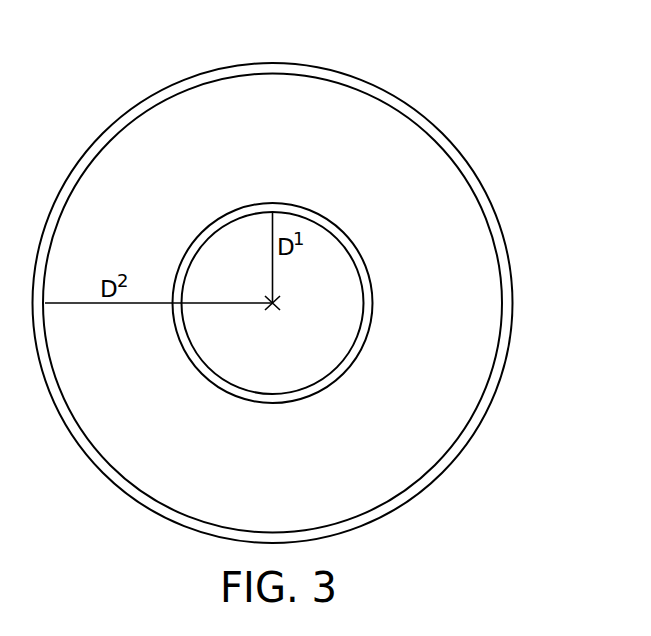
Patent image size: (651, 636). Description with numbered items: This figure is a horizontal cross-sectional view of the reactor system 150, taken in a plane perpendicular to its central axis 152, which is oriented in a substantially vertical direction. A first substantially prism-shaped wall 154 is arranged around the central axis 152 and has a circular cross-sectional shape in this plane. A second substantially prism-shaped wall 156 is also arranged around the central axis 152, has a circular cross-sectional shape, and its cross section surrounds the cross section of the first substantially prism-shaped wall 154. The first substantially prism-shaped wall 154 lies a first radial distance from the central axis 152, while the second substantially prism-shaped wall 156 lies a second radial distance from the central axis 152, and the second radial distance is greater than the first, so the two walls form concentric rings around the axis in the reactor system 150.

The reactor system 150 is at (514, 133).
The central axis 152 is at (278, 300).
The first substantially prism-shaped wall 154 is at (374, 303).
The second substantially prism-shaped wall 156 is at (513, 303).